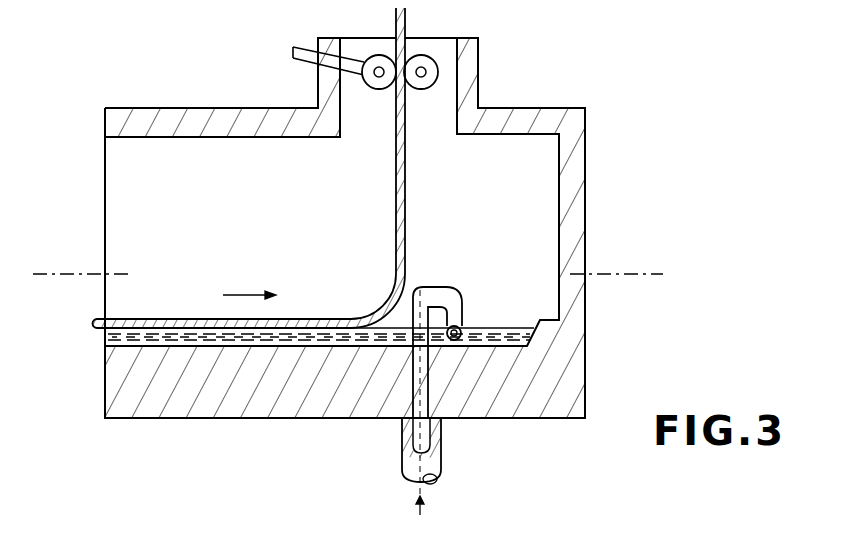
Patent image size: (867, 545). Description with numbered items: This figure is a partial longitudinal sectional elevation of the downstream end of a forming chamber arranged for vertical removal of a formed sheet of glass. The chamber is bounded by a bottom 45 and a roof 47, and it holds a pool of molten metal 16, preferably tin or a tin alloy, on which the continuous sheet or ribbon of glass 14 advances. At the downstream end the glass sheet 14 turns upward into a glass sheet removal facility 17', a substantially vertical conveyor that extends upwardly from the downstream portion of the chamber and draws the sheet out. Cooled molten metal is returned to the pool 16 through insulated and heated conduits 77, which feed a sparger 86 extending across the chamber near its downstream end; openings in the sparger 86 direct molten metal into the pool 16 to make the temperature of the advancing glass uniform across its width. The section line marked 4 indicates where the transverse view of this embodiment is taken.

The sheet or ribbon of glass 14 is at (405, 222).
The pool of molten metal 16 is at (503, 326).
The glass sheet removal facility 17' is at (345, 226).
The bottom 45 is at (257, 410).
The roof 47 is at (235, 107).
The conduits 77 is at (442, 460).
The sparger 86 is at (461, 328).
The section line 4- 4 is at (43, 290).